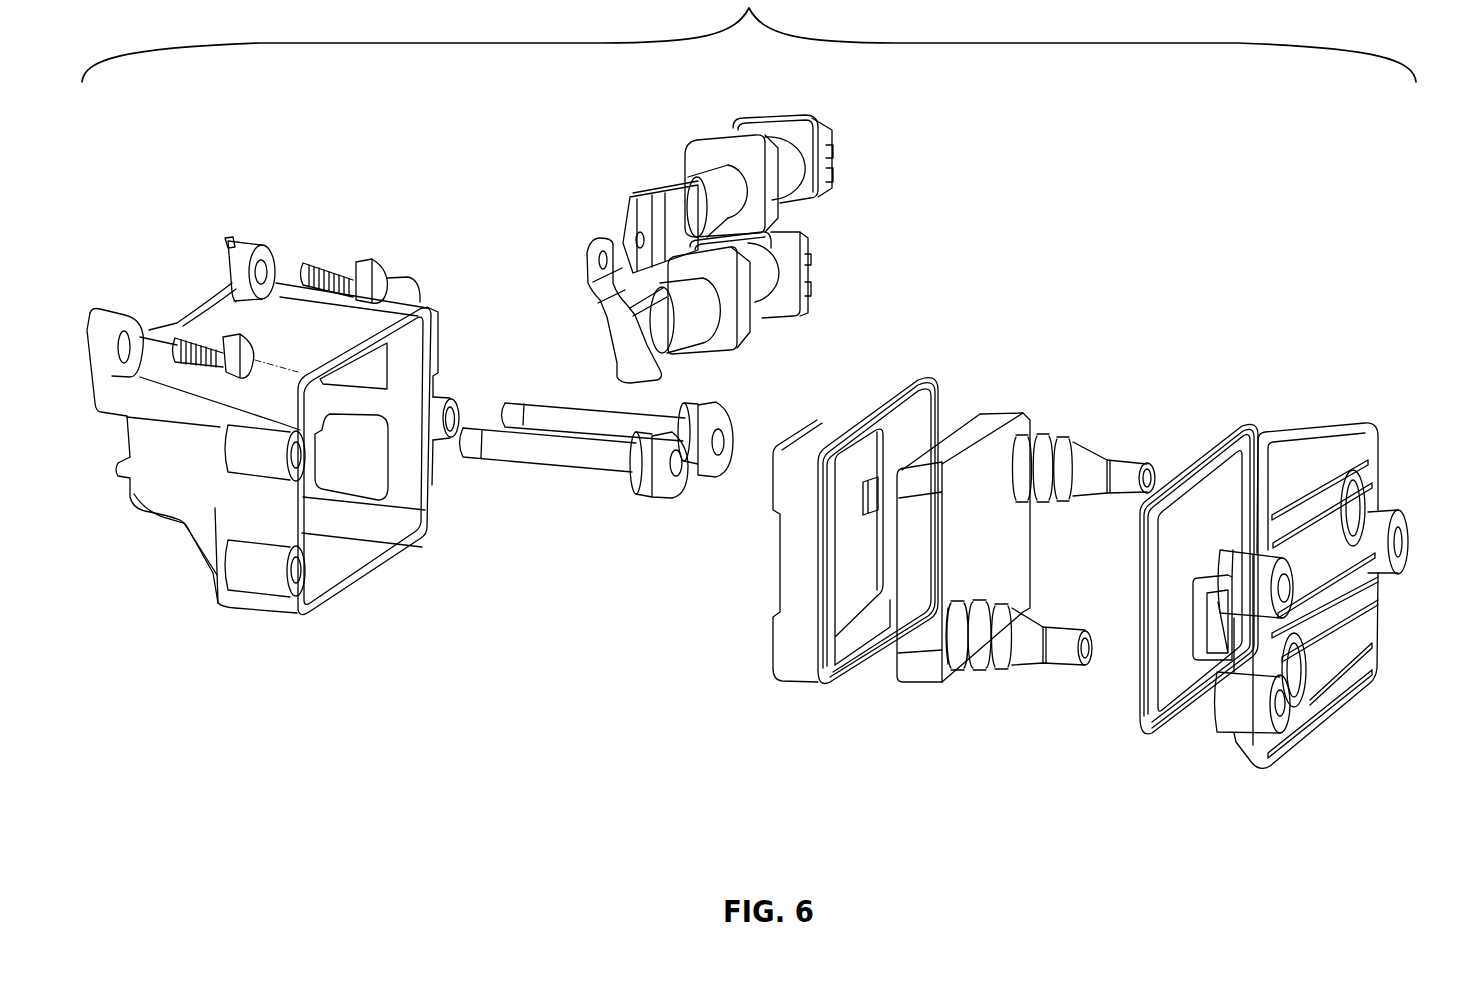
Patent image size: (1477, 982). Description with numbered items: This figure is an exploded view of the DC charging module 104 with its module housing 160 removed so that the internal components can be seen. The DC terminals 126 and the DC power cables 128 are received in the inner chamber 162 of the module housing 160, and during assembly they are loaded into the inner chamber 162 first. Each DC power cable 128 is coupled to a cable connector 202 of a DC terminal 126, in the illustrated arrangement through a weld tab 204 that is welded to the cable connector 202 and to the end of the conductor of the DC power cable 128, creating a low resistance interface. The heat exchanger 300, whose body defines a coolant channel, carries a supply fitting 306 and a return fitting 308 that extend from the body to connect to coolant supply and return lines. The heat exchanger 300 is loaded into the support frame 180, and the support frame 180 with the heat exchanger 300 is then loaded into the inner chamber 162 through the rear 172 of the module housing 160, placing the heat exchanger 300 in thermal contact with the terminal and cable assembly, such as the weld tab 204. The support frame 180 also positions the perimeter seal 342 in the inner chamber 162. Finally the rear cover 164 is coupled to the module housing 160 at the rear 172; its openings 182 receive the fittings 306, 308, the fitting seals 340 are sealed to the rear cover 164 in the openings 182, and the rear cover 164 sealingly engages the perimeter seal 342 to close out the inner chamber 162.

The DC charging module 104 is at (926, 131).
The DC terminal 126 is at (565, 455).
The DC power cable 128 is at (782, 165).
The module housing 160 is at (213, 580).
The inner chamber 162 is at (340, 555).
The rear cover 164 is at (1315, 698).
The rear 172 is at (395, 563).
The support frame 180 is at (800, 658).
The openings 182 is at (1352, 507).
The cable connector 202 is at (735, 408).
The weld tab 204 is at (674, 197).
The heat exchanger 300 is at (933, 700).
The supply fitting 306 is at (1052, 448).
The return fitting 308 is at (1013, 650).
The fitting seals 340 is at (967, 653).
The perimeter seal 342 is at (1142, 713).